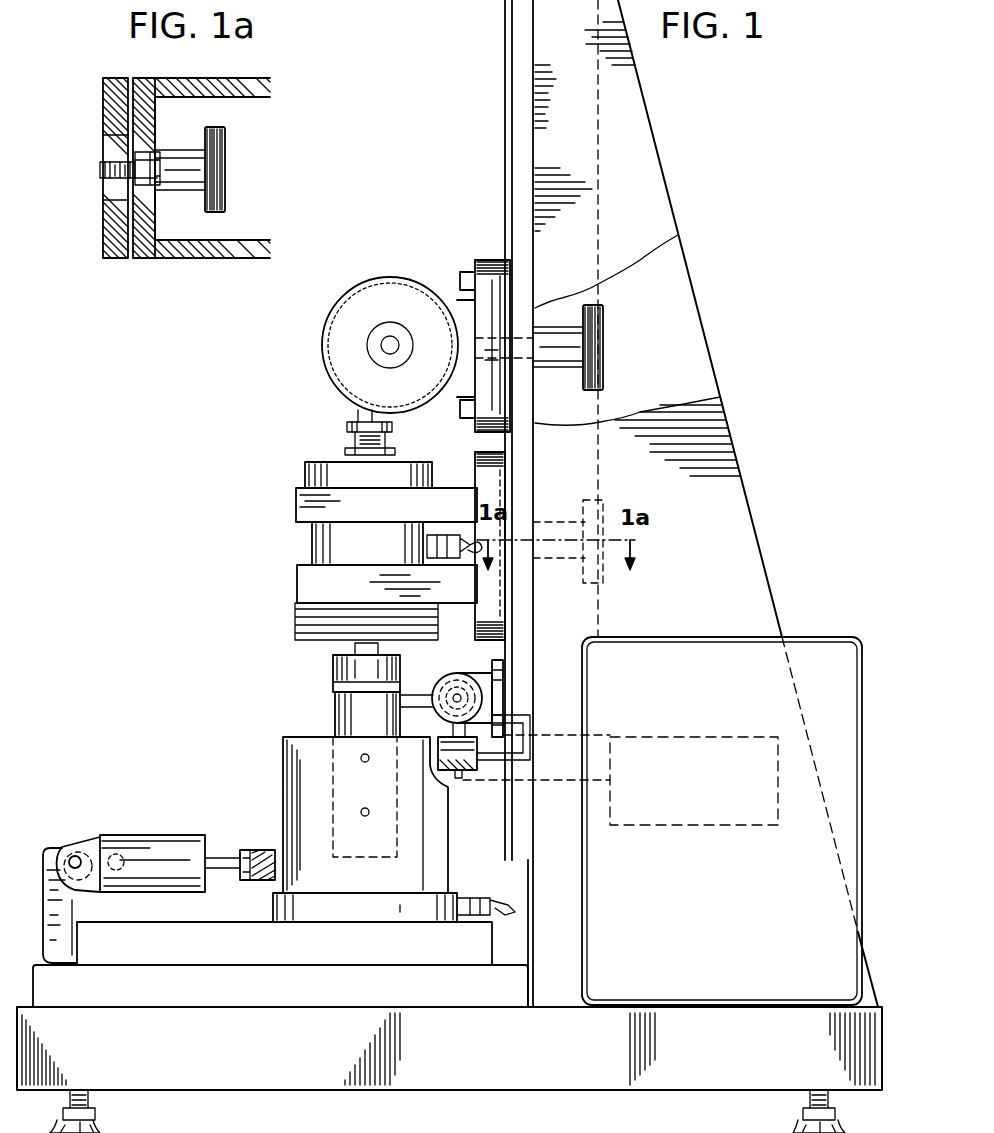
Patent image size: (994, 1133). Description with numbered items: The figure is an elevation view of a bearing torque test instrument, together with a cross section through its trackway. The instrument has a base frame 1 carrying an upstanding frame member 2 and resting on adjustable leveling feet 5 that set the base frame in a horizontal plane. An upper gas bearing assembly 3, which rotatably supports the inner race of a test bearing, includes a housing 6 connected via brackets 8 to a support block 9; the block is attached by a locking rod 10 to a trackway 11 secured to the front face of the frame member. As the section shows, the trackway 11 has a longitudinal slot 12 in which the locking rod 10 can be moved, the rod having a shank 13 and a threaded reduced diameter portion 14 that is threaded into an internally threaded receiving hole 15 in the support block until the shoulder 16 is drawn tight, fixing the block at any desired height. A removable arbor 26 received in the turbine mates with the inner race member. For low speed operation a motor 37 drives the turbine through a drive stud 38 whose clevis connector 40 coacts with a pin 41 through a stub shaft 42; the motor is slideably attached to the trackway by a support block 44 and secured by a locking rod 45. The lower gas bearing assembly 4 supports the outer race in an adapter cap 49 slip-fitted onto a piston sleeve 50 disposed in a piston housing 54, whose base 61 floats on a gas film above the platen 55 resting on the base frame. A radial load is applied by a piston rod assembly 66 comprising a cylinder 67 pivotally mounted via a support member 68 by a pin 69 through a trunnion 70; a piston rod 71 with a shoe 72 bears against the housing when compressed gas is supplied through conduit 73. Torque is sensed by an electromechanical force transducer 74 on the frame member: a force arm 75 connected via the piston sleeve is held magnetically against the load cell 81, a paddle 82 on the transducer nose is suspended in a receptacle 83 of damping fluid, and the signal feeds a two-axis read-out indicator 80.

In FIG. 1, the base frame 1 is at (277, 1095).
In FIG. 1, the upstanding frame member 2 is at (722, 796).
In FIG. 1, the upper gas bearing assembly 3 is at (252, 552).
In FIG. 1, the lower gas bearing assembly 4 is at (238, 766).
In FIG. 1, the adjustable leveling feet 5 is at (100, 1130).
In FIG. 1, the housing 6 is at (330, 541).
In FIG. 1, the brackets 8 is at (315, 510).
In FIG. 1A, the support block 9 is at (116, 240).
In FIG. 1, the support block 9 is at (490, 600).
In FIG. 1A, the locking rod 10 is at (213, 185).
In FIG. 1, the locking rod 10 is at (605, 512).
In FIG. 1A, the trackway 11 is at (118, 190).
In FIG. 1, the trackway 11 is at (503, 172).
In FIG. 1A, the longitudinal slot 12 is at (160, 160).
In FIG. 1A, the shank 13 is at (172, 185).
In FIG. 1, the shank 13 is at (565, 520).
In FIG. 1A, the threaded reduced diameter portion 14 is at (104, 168).
In FIG. 1A, the internally threaded receiving hole 15 is at (105, 172).
In FIG. 1A, the shoulder 16 is at (150, 160).
In FIG. 1, the arbor 26 is at (358, 648).
In FIG. 1, the motor 37 is at (342, 343).
In FIG. 1, the drive stud 38 is at (358, 415).
In FIG. 1, the clevis connector 40 is at (347, 428).
In FIG. 1, the pin 41 is at (385, 446).
In FIG. 1, the stub shaft 42 is at (368, 475).
In FIG. 1, the support block 44 is at (487, 262).
In FIG. 1, the locking rod 45 is at (595, 345).
In FIG. 1, the adapter cap 49 is at (345, 672).
In FIG. 1, the piston sleeve 50 is at (345, 696).
In FIG. 1, the piston housing 54 is at (303, 778).
In FIG. 1, the platen 55 is at (280, 964).
In FIG. 1, the base of piston housing 61 is at (440, 893).
In FIG. 1, the piston rod assembly 66 is at (140, 810).
In FIG. 1, the cylinder 67 is at (192, 850).
In FIG. 1, the support member 68 is at (52, 908).
In FIG. 1, the pin 69 is at (72, 855).
In FIG. 1, the trunnion 70 is at (60, 865).
In FIG. 1, the piston rod 71 is at (220, 870).
In FIG. 1, the shoe 72 is at (262, 850).
In FIG. 1, the conduit 73 is at (118, 872).
In FIG. 1, the electromechanical force transducer 74 is at (478, 675).
In FIG. 1, the force arm 75 is at (408, 693).
In FIG. 1, the two-axis read-out indicator 80 is at (705, 735).
In FIG. 1, the load cell 81 is at (505, 716).
In FIG. 1, the paddle 82 is at (455, 731).
In FIG. 1, the receptacle 83 is at (463, 772).